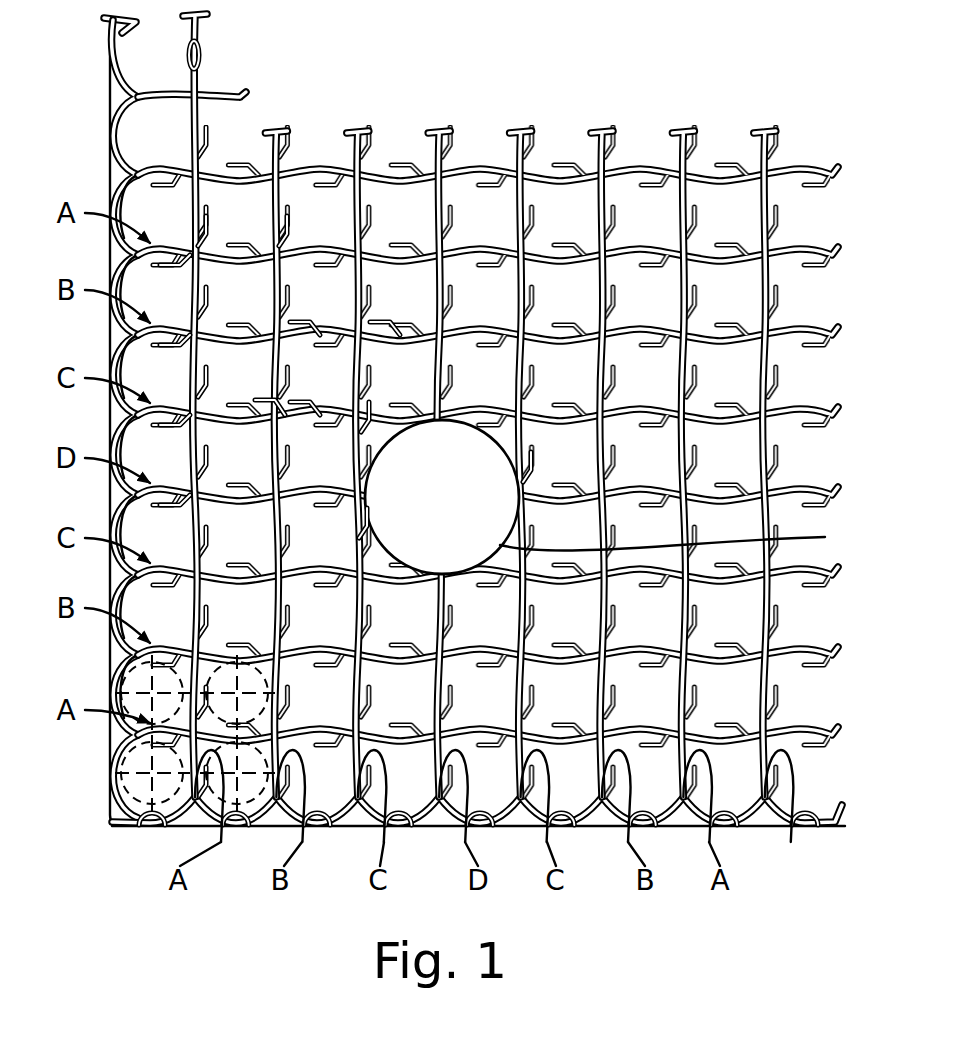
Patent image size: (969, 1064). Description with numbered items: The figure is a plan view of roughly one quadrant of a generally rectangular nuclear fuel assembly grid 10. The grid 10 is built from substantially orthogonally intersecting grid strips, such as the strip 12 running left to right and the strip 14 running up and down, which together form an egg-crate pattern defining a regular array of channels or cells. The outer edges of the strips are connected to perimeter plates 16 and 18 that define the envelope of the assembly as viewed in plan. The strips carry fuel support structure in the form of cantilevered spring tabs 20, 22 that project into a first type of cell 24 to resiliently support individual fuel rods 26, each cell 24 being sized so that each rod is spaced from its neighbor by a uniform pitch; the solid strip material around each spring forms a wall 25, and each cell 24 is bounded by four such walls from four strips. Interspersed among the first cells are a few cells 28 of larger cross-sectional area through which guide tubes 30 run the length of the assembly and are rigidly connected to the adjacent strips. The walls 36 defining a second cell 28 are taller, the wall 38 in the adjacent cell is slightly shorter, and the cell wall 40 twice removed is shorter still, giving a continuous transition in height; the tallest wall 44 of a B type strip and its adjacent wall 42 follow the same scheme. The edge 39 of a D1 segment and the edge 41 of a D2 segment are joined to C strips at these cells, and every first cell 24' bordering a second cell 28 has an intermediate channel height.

The nuclear fuel assembly grid 10 is at (594, 88).
The grid strip 12 is at (470, 172).
The grid strip 14 is at (770, 268).
The perimeter plate 16 is at (122, 172).
The perimeter plate 18 is at (770, 827).
The cantilevered spring tab 20 is at (205, 145).
The cantilevered spring tab 22 is at (740, 726).
The first type of cell 24 is at (449, 484).
The first cell bordering a second cell 24' is at (396, 617).
The wall 25 is at (204, 272).
The fuel rod 26 is at (140, 690).
The second type of cell 28 is at (498, 440).
The guide tube 30 is at (681, 535).
The wall defining the second cell 36 is at (366, 412).
The transition wall 38 is at (290, 500).
The right side edge of segment D1 39 is at (358, 506).
The cell wall 40 is at (210, 418).
The edge of segment D2 41 is at (532, 486).
The adjacent wall 42 is at (290, 395).
The tallest wall of B strip 44 is at (370, 335).